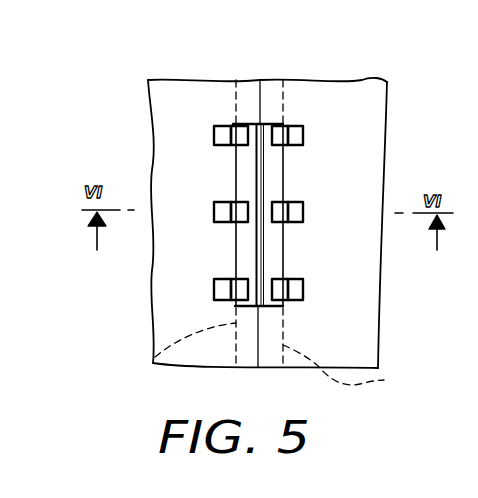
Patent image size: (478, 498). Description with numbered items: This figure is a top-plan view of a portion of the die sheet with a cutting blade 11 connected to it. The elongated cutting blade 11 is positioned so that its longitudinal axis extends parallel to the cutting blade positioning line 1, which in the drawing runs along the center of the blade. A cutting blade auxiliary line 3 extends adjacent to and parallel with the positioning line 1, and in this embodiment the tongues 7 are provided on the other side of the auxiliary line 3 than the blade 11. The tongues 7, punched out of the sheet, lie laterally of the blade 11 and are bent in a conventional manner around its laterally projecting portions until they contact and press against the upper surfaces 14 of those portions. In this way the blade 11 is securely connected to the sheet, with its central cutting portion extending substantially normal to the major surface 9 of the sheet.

The cutting blade positioning line 1 is at (258, 338).
The cutting blade auxiliary line 3 is at (152, 359).
The tongue 7 is at (303, 135).
The major surface 9 is at (356, 126).
The cutting blade 11 is at (266, 176).
The upper surface 14 is at (246, 254).